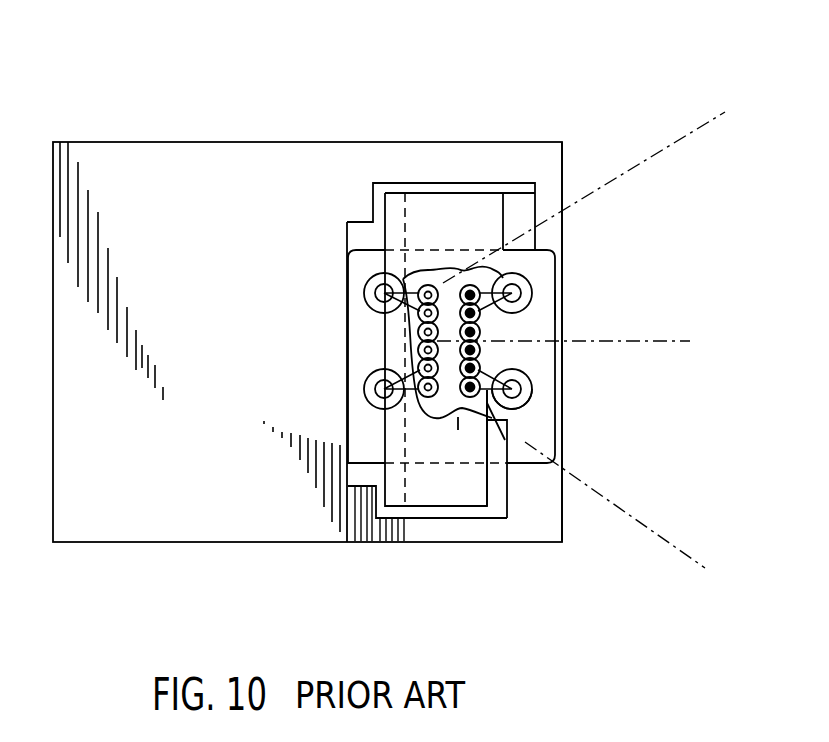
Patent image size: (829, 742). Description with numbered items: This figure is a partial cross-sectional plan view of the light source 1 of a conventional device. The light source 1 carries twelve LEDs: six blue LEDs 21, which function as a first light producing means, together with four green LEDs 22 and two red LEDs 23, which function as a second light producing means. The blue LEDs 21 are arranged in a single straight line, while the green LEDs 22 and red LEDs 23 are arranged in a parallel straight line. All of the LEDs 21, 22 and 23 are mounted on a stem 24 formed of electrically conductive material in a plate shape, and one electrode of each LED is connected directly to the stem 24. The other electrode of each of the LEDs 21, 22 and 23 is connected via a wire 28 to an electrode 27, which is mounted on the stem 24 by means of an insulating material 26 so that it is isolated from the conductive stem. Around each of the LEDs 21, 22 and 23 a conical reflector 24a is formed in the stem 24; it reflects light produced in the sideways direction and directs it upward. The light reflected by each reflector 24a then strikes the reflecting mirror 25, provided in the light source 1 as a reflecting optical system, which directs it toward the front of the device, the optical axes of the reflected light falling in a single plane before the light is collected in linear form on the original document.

The light source 1 is at (168, 124).
The blue LEDs 21 is at (478, 268).
The green LEDs 22 is at (421, 286).
The red LEDs 23 is at (418, 313).
The stem 24 is at (542, 360).
The conical reflector 24a is at (563, 297).
The mirror 25 is at (432, 197).
The insulating material 26 is at (490, 405).
The electrode 27 is at (532, 396).
The wire 28 is at (513, 407).